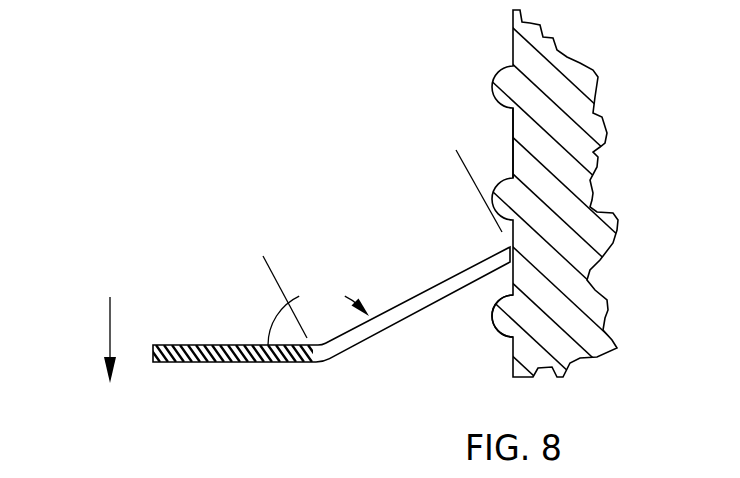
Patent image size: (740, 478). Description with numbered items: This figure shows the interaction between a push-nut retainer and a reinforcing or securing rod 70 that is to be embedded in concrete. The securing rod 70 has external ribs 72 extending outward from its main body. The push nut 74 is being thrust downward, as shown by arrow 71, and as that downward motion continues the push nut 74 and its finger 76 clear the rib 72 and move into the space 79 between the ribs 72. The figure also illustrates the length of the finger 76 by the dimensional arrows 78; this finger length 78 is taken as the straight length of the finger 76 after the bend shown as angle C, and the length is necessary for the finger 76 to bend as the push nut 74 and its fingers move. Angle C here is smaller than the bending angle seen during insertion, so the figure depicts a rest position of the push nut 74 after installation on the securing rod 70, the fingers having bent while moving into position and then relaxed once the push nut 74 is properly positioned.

The securing rod 70 is at (590, 165).
The arrow 71 is at (110, 313).
The external ribs 72 is at (500, 328).
The push nut 74 is at (259, 408).
The finger 76 is at (349, 336).
The dimensional arrows 78 is at (458, 165).
The space 79 is at (513, 140).